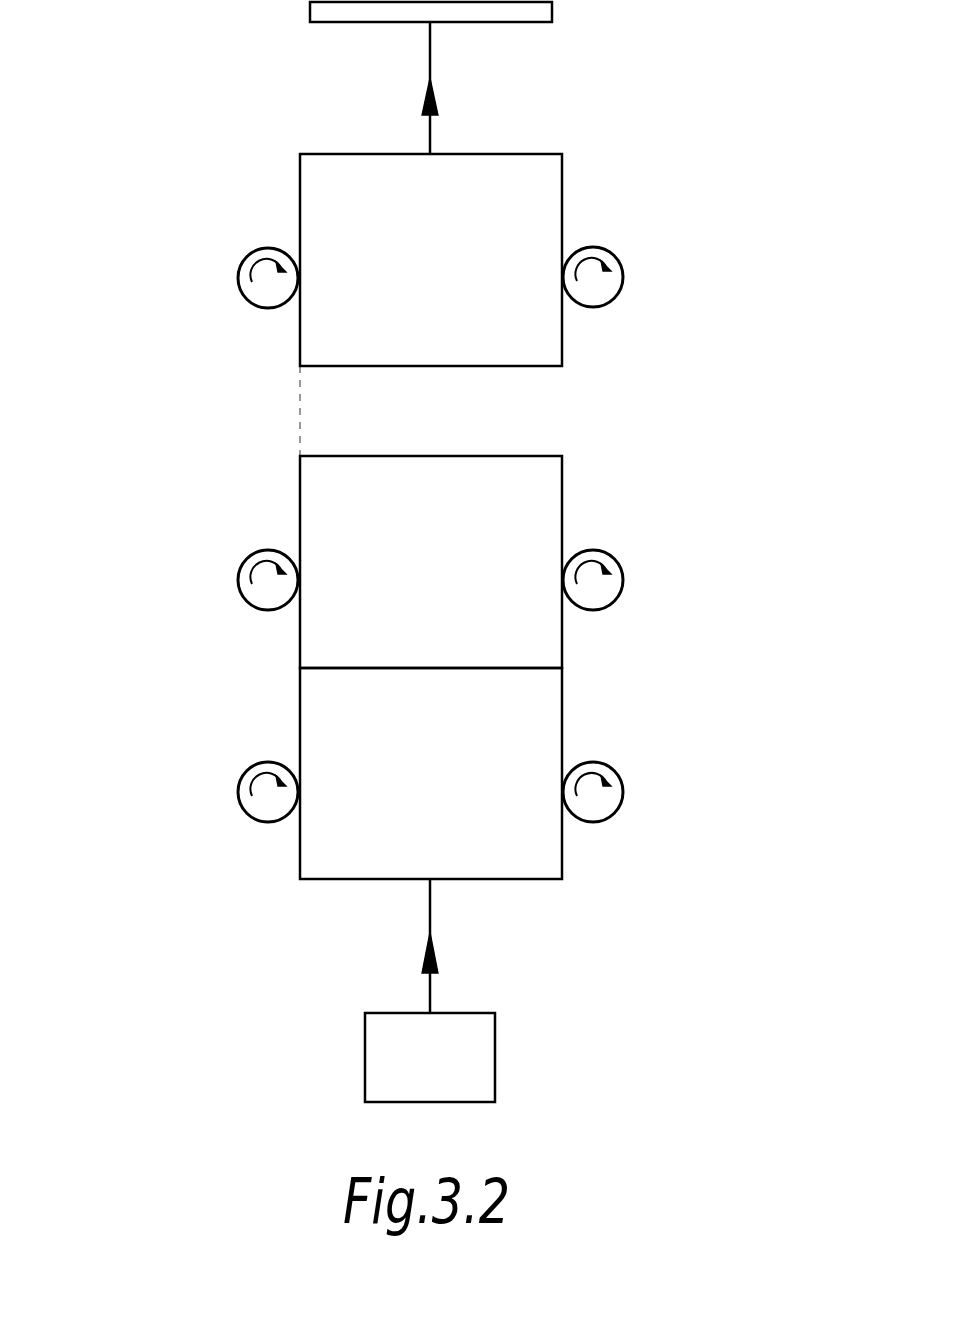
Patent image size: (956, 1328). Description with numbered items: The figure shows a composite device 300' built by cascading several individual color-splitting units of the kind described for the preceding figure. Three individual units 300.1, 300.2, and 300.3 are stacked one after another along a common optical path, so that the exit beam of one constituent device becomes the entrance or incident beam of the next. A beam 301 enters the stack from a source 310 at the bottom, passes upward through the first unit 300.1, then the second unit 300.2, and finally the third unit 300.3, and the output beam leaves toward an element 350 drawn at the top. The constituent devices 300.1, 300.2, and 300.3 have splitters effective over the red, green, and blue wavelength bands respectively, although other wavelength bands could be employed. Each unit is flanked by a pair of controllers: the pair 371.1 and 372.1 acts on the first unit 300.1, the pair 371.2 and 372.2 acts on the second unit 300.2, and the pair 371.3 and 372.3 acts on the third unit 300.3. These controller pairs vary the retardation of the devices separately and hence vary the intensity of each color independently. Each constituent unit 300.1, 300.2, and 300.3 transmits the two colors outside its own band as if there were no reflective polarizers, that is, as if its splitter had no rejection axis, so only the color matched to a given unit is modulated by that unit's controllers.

The composite device 300' is at (531, 264).
The individual unit 300.1 is at (576, 686).
The individual unit 300.2 is at (576, 474).
The individual unit 300.3 is at (576, 172).
The material web / feed direction 301 is at (432, 912).
The material source 310 is at (495, 1022).
The take-up / output unit 350 is at (536, 22).
The controller 371.1 is at (242, 780).
The controller 371.2 is at (242, 565).
The controller 371.3 is at (242, 262).
The controller 372.1 is at (620, 775).
The controller 372.2 is at (620, 565).
The controller 372.3 is at (622, 258).